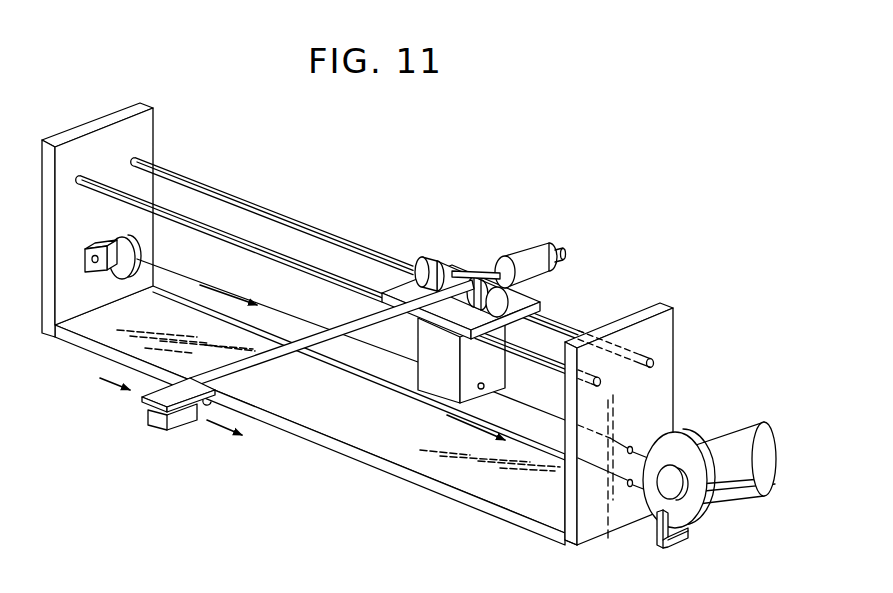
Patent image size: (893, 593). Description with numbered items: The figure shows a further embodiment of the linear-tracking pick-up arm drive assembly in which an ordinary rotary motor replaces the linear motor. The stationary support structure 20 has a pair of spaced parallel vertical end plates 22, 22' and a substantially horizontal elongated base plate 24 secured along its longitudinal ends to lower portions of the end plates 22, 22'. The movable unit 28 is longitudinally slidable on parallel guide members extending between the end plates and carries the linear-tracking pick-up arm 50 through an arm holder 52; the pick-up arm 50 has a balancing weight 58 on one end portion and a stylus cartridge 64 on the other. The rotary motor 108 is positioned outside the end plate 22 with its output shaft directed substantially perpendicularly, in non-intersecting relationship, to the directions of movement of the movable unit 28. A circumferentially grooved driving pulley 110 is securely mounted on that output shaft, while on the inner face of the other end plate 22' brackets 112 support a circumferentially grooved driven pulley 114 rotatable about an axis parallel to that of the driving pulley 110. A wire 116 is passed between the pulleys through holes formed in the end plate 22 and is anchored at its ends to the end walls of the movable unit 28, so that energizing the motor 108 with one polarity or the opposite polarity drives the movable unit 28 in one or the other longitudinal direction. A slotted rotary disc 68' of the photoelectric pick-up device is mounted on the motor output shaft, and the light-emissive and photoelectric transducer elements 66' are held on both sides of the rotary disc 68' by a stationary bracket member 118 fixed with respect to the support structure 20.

The stationary support structure 20 is at (563, 541).
The end plate 22 is at (619, 410).
The end plate 22' is at (122, 220).
The base plate 24 is at (393, 472).
The movable unit 28 is at (548, 301).
The linear-tracking pick-up arm 50 is at (346, 331).
The arm holder 52 is at (465, 262).
The balancing weight 58 is at (528, 255).
The stylus cartridge 64 is at (173, 428).
The cable 66' is at (703, 562).
The rotary disc 68' is at (679, 461).
The rotary motor 108 is at (763, 440).
The driving pulley 110 is at (684, 494).
The brackets 112 is at (104, 244).
The driven pulley 114 is at (136, 266).
The wire 116 is at (230, 291).
The stationary bracket member 118 is at (685, 542).